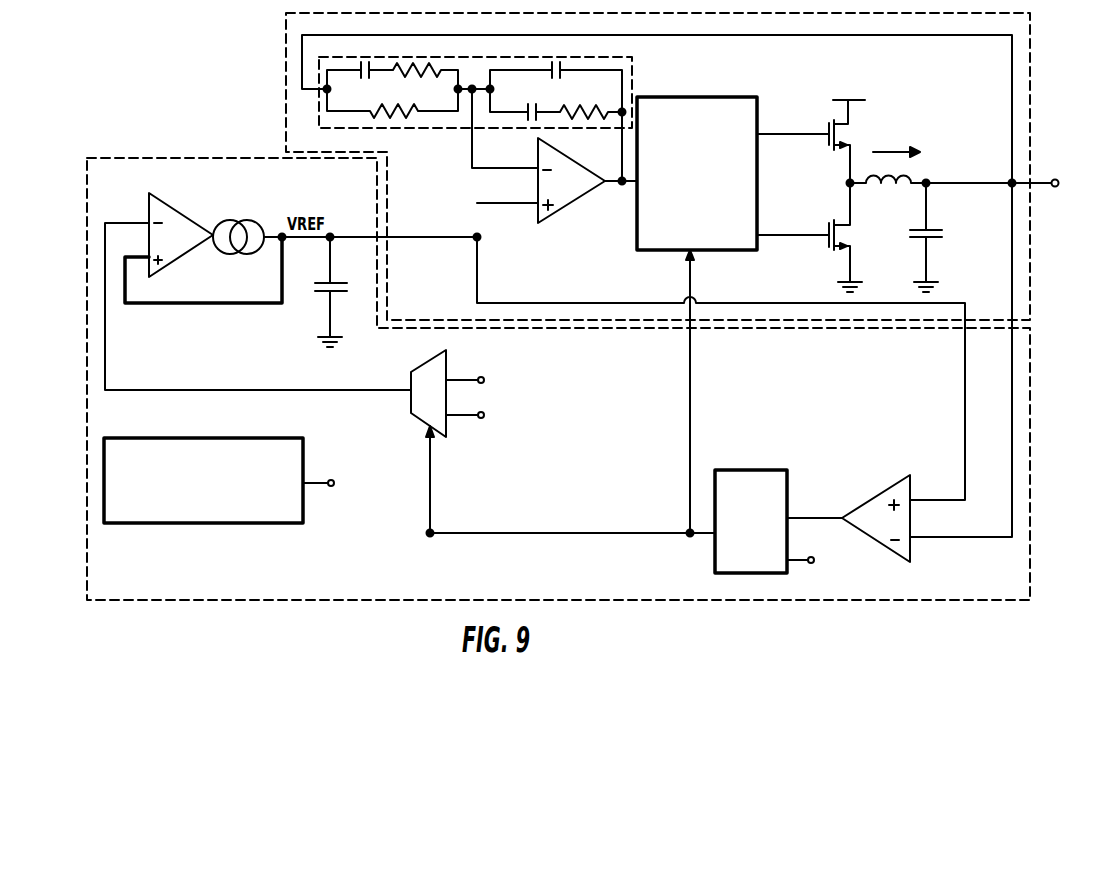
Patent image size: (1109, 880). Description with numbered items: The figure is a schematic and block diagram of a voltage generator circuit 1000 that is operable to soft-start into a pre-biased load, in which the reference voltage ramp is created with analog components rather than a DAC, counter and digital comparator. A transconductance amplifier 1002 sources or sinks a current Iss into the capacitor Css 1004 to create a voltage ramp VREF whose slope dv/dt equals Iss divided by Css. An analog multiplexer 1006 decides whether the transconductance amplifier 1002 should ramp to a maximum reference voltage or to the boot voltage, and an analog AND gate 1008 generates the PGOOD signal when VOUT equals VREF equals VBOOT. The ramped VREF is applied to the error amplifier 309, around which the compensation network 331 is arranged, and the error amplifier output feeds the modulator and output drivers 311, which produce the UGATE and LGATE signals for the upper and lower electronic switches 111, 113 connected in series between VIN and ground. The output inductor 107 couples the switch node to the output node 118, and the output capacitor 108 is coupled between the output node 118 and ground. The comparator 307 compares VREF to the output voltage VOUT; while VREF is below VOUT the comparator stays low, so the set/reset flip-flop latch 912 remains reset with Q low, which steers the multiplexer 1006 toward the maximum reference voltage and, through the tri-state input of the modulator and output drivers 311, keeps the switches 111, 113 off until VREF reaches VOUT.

The circuit 1000 is at (203, 129).
The transconductance amplifier 1002 is at (196, 222).
The capacitor Css 1004 is at (320, 292).
The analog multiplexer 1006 is at (446, 432).
The analog AND gate 1008 is at (205, 437).
The compensation network 331 is at (633, 78).
The modulator and output drivers 311 is at (712, 97).
The error amplifier 309 is at (572, 205).
The comparator 307 is at (870, 500).
The set/reset flip-flop latch 912 is at (757, 470).
The electronic switch 111 is at (850, 133).
The electronic switch 113 is at (850, 237).
The output inductor 107 is at (927, 181).
The output capacitor 108 is at (945, 242).
The output node 118 is at (1055, 179).